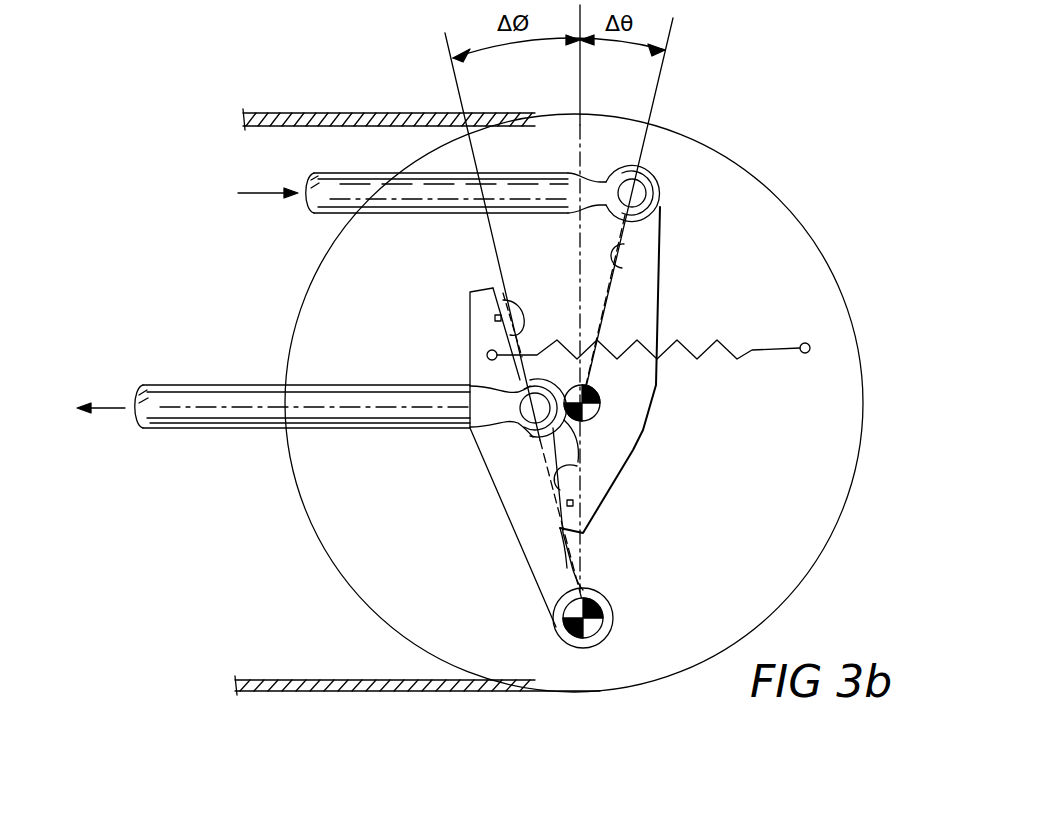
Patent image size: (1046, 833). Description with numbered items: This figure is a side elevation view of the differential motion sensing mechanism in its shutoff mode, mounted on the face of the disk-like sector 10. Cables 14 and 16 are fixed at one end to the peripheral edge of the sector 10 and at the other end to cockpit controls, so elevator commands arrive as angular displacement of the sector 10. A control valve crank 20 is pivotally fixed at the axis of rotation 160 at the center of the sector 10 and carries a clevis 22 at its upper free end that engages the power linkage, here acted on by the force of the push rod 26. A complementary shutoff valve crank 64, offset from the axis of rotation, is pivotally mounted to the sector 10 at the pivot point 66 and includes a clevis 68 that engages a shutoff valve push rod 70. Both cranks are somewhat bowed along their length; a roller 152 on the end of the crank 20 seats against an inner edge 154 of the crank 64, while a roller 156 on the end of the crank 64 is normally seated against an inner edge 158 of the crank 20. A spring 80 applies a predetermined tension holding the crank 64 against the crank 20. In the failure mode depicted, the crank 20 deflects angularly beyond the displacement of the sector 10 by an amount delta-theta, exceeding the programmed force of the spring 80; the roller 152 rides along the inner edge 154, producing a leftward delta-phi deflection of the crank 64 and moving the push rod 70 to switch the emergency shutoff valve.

The sector 10 is at (432, 279).
The cable 14 is at (352, 112).
The cable 16 is at (310, 680).
The control valve crank 20 is at (632, 453).
The clevis 22 is at (640, 195).
The push rod 26 is at (337, 190).
The shutoff valve crank 64 is at (528, 543).
The pivot point 66 is at (563, 623).
The clevis 68 is at (522, 407).
The shutoff valve push rod 70 is at (417, 408).
The spring 80 is at (752, 355).
The roller 152 is at (570, 462).
The inner edge 154 is at (567, 568).
The roller 156 is at (515, 305).
The inner edge 158 is at (613, 268).
The axis of rotation 160 is at (603, 393).